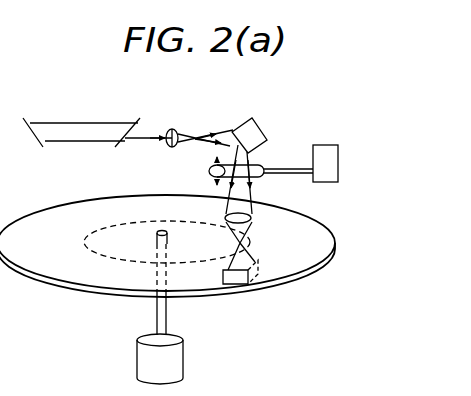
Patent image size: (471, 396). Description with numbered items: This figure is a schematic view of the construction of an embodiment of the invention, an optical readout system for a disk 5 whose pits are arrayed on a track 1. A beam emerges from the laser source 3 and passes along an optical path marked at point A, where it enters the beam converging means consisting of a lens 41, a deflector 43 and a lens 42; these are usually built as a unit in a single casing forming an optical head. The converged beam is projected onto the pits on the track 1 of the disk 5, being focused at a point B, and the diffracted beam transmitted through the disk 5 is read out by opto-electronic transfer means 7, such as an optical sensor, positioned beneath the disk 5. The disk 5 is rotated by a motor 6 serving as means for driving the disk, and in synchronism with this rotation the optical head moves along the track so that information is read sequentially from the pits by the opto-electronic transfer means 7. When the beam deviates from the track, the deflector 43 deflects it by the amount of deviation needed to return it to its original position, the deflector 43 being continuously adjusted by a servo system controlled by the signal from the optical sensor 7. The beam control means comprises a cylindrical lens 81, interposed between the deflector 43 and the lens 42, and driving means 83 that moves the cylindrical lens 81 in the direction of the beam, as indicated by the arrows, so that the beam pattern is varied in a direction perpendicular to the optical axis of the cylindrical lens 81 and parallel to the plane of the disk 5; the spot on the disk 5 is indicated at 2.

The track 1 is at (97, 257).
The optical disk 2 is at (241, 243).
The laser source 3 is at (100, 123).
The lens 41 is at (172, 128).
The lens 42 is at (251, 216).
The deflector 43 is at (256, 125).
The disk 5 is at (303, 276).
The motor 6 is at (184, 358).
The opto-electronic transfer means 7 is at (237, 286).
The cylindrical lens 81 is at (258, 164).
The driving means 83 is at (339, 165).
The point A is at (192, 141).
The point B is at (238, 243).